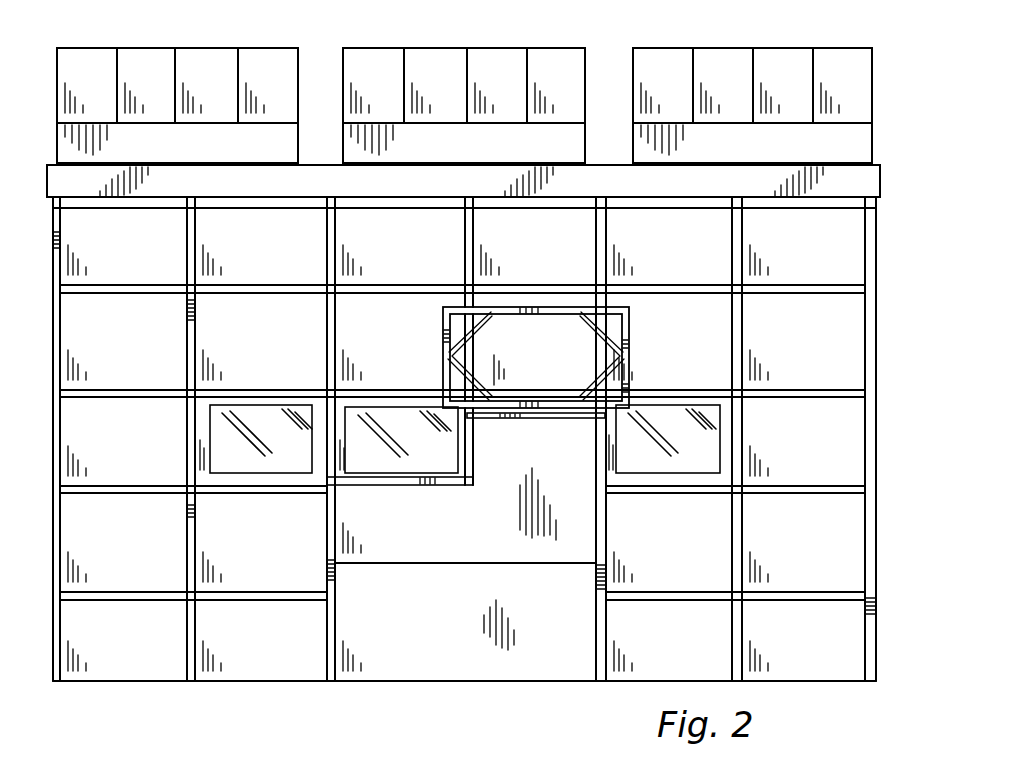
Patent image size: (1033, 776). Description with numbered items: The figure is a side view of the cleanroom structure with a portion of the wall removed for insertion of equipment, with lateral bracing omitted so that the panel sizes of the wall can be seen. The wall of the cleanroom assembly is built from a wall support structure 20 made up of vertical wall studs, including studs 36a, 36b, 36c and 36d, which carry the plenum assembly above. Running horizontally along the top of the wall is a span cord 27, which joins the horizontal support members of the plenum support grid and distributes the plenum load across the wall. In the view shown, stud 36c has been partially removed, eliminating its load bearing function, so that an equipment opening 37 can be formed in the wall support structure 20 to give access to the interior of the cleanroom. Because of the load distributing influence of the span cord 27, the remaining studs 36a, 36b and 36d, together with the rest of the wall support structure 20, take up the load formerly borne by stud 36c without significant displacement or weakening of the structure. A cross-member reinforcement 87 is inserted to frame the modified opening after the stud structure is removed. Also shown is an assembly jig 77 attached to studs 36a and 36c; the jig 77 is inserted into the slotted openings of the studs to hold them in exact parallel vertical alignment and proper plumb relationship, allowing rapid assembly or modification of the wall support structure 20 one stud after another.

The wall support structure 20 is at (879, 284).
The span cord 27 is at (868, 178).
The stud 36a is at (600, 556).
The stud 36b is at (744, 533).
The stud 36c is at (478, 450).
The stud 36d is at (337, 513).
The equipment opening 37 is at (560, 657).
The assembly jig 77 is at (637, 341).
The cross-member reinforcement 87 is at (567, 418).